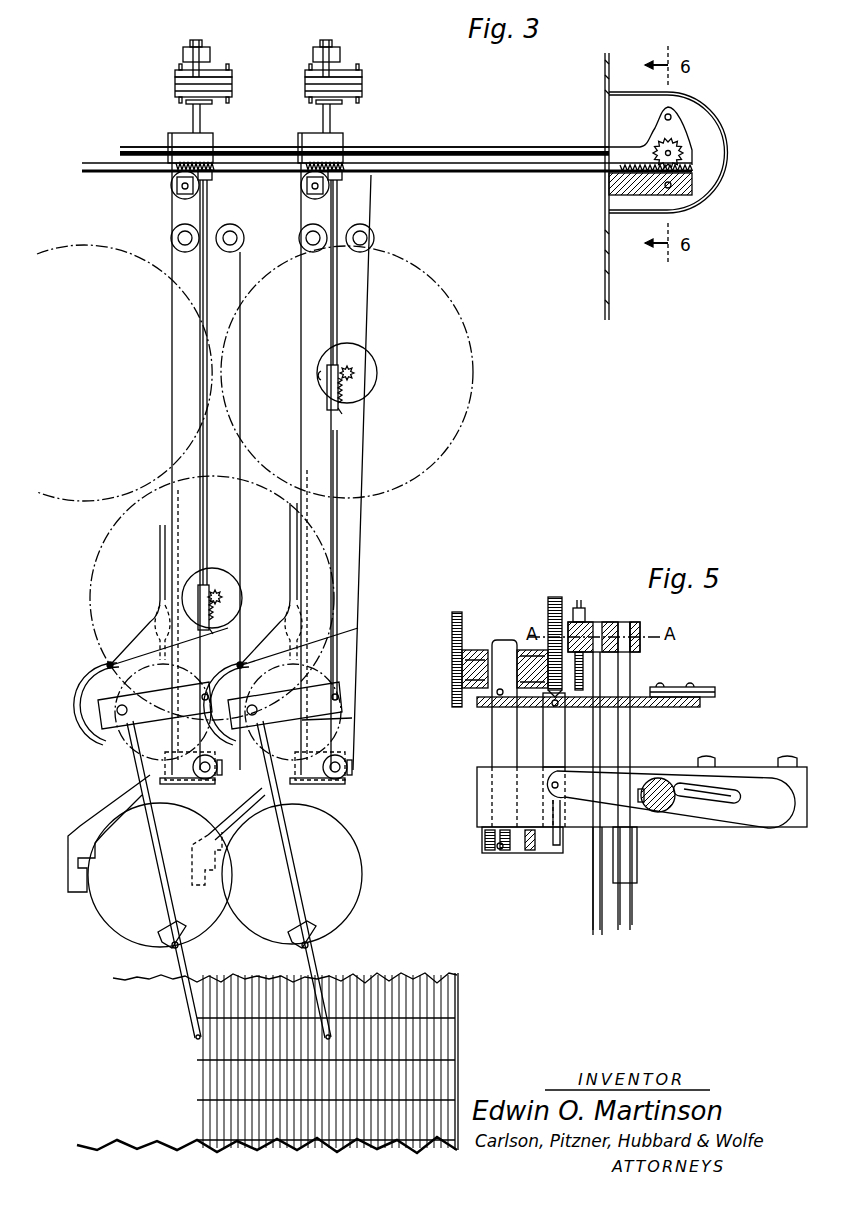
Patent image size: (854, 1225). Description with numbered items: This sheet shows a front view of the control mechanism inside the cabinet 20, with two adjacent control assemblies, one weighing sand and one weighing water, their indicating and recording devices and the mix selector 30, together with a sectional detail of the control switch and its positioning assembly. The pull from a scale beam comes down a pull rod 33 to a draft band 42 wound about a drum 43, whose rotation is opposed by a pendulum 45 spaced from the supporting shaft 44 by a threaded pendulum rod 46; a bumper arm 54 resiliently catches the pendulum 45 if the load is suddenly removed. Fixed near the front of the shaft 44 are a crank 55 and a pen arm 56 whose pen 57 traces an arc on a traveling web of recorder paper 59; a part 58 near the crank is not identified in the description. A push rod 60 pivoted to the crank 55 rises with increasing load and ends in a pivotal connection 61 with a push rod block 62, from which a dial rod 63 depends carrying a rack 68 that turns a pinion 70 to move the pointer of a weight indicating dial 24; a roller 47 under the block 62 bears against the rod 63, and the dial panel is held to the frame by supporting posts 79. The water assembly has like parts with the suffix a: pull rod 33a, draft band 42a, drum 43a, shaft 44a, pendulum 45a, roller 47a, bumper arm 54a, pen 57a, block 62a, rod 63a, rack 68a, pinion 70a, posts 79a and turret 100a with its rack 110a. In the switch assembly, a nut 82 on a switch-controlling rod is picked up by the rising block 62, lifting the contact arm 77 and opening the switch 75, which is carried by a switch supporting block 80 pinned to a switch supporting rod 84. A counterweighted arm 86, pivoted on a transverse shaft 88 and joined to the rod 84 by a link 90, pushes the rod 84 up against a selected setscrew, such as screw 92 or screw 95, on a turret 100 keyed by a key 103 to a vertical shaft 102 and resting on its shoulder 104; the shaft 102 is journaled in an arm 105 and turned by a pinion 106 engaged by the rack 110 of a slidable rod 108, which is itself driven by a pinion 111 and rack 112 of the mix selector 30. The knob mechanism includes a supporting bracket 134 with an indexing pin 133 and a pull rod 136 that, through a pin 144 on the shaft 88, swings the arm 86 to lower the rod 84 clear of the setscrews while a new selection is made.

In FIG. 3, the cabinet 20 is at (609, 288).
In FIG. 3, the weight indicating dial 24 is at (87, 558).
In FIG. 3, the mix selector 30 is at (712, 104).
In FIG. 3, the pull rod 33 is at (290, 540).
In FIG. 3, the pull rod 33a is at (160, 560).
In FIG. 3, the draft band 42 is at (240, 748).
In FIG. 3, the draft band 42a is at (100, 748).
In FIG. 3, the drum 43 is at (240, 660).
In FIG. 3, the drum 43a is at (106, 664).
In FIG. 3, the supporting shaft 44 is at (252, 705).
In FIG. 3, the supporting shaft 44a is at (117, 712).
In FIG. 3, the pendulum 45 is at (338, 910).
In FIG. 3, the pendulum 45a is at (197, 935).
In FIG. 3, the pendulum rod 46 is at (270, 794).
In FIG. 5, the roller 47 is at (640, 885).
In FIG. 3, the roller 47a is at (171, 183).
In FIG. 3, the bumper arm 54 is at (232, 800).
In FIG. 3, the bumper arm 54a is at (98, 806).
In FIG. 3, the crank 55 is at (237, 705).
In FIG. 3, the pen arm 56 is at (292, 860).
In FIG. 3, the pen 57 is at (325, 1038).
In FIG. 3, the pen 57a is at (195, 1037).
In FIG. 3, the plate 58 is at (342, 694).
In FIG. 3, the recorder paper 59 is at (445, 1035).
In FIG. 3, the push rod 60 is at (333, 480).
In FIG. 5, the push rod 60 is at (592, 915).
In FIG. 5, the pivotal connection 61 is at (600, 622).
In FIG. 3, the push rod block 62 is at (325, 47).
In FIG. 5, the push rod block 62 is at (642, 625).
In FIG. 3, the push rod block 62a is at (195, 47).
In FIG. 3, the dial rod 63 is at (338, 300).
In FIG. 5, the dial rod 63 is at (632, 662).
In FIG. 3, the dial rod 63a is at (206, 505).
In FIG. 3, the rack 68 is at (326, 396).
In FIG. 3, the rack 68a is at (212, 612).
In FIG. 3, the pinion 70 is at (354, 370).
In FIG. 3, the pinion 70a is at (222, 594).
In FIG. 5, the switch 75 is at (705, 685).
In FIG. 5, the contact-bearing arm 77 is at (608, 690).
In FIG. 3, the supporting post 79 is at (362, 775).
In FIG. 3, the supporting post 79a is at (255, 218).
In FIG. 5, the switch supporting block 80 is at (665, 708).
In FIG. 5, the nut 82 is at (590, 610).
In FIG. 5, the switch supporting rod 84 is at (552, 750).
In FIG. 5, the counterweighted arm 86 is at (760, 820).
In FIG. 5, the transverse shaft 88 is at (658, 778).
In FIG. 5, the link 90 is at (562, 838).
In FIG. 5, the setscrew 92 is at (555, 597).
In FIG. 5, the setscrew 95 is at (452, 628).
In FIG. 3, the turret 100 is at (363, 88).
In FIG. 5, the turret 100 is at (462, 677).
In FIG. 3, the turret 100a is at (233, 88).
In FIG. 5, the vertical shaft 102 is at (500, 638).
In FIG. 5, the key 103 is at (520, 648).
In FIG. 5, the shoulder 104 is at (501, 695).
In FIG. 3, the arm 105 is at (346, 184).
In FIG. 5, the arm 105 is at (477, 793).
In FIG. 3, the pinion 106 is at (219, 184).
In FIG. 5, the pinion 106 is at (482, 838).
In FIG. 3, the slidable rod 108 is at (455, 177).
In FIG. 5, the slidable rod 108 is at (530, 853).
In FIG. 3, the rack 110 is at (346, 164).
In FIG. 5, the rack 110 is at (530, 828).
In FIG. 3, the rack 110a is at (216, 164).
In FIG. 3, the pinion 111 is at (683, 148).
In FIG. 3, the rack 112 is at (686, 166).
In FIG. 3, the indexing pin 133 is at (667, 193).
In FIG. 3, the supporting bracket 134 is at (637, 148).
In FIG. 3, the pull rod 136 is at (672, 112).
In FIG. 5, the pin 144 is at (725, 805).